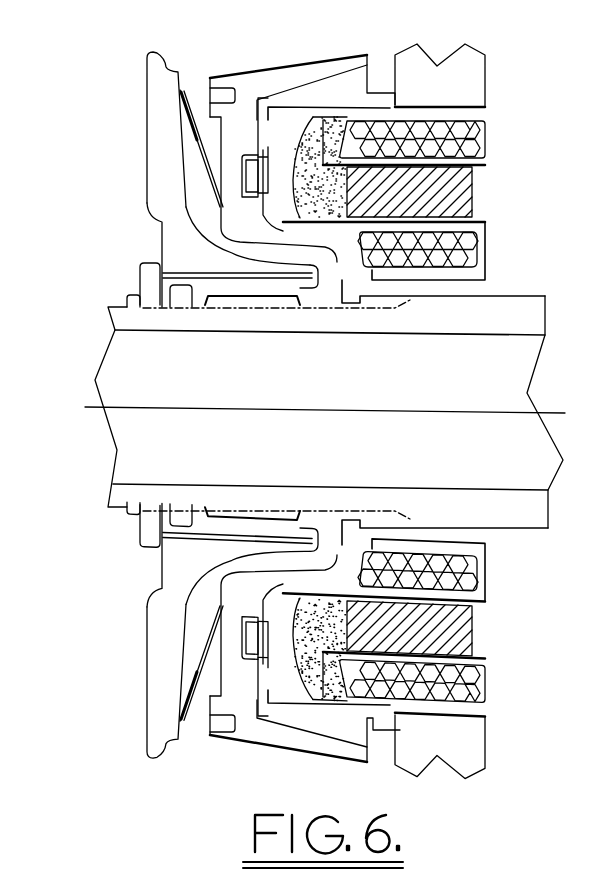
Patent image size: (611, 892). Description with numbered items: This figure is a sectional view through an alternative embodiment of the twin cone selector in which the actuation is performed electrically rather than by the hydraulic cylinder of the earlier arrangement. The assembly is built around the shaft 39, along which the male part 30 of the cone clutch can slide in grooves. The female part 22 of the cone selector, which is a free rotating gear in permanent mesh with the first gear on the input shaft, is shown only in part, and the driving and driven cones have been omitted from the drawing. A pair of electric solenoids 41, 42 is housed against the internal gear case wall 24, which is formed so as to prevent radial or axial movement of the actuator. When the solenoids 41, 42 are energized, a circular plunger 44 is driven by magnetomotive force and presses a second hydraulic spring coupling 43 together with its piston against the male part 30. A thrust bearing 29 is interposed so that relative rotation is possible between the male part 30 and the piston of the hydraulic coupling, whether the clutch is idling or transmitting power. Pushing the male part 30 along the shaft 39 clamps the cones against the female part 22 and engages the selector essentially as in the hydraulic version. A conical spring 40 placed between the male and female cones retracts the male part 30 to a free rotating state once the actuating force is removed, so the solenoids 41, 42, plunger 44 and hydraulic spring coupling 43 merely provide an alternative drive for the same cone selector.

The female part 22 is at (148, 78).
The internal gear case wall 24 is at (485, 744).
The thrust bearing 29 is at (247, 643).
The male part 30 is at (221, 147).
The shaft 39 is at (535, 318).
The conical spring 40 is at (215, 182).
The electric solenoid 41 is at (465, 138).
The electric solenoid 42 is at (473, 247).
The second hydraulic spring coupling 43 is at (316, 132).
The circular plunger 44 is at (473, 622).